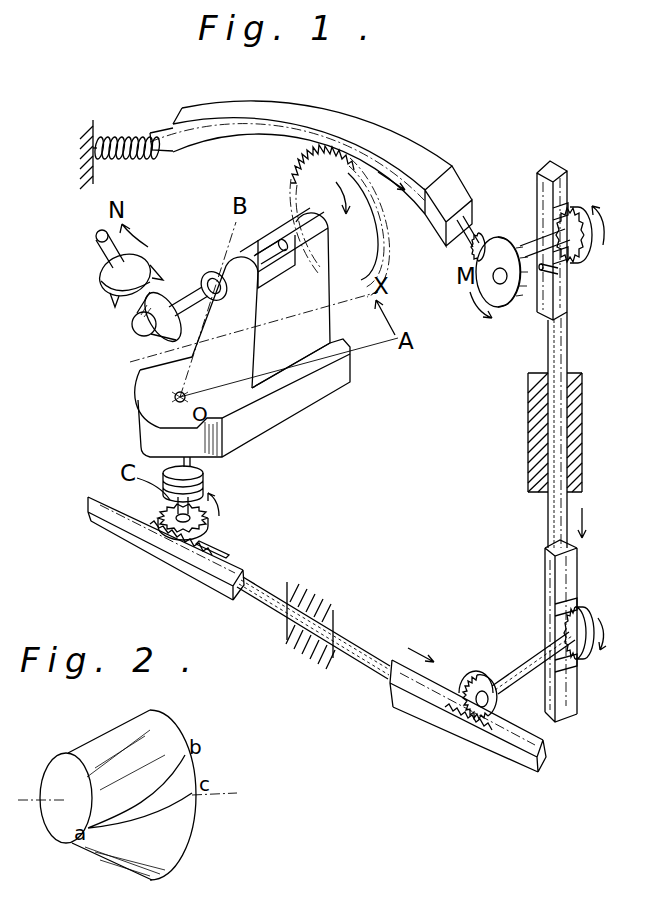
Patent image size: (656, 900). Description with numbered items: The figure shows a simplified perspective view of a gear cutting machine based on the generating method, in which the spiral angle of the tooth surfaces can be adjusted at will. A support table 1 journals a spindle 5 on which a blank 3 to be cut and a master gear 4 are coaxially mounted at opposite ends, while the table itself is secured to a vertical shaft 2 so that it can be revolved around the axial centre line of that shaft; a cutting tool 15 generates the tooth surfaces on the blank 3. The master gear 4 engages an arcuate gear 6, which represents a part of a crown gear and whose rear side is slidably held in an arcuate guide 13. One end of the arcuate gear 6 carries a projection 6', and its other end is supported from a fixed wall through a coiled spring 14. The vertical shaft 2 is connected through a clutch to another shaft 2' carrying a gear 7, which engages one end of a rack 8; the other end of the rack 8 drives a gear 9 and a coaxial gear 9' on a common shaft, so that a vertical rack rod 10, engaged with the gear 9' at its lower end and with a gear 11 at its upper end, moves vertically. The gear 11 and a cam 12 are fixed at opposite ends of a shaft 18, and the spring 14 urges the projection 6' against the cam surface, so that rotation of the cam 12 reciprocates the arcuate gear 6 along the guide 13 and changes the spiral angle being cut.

In FIG. 1, the support table 1 is at (290, 405).
In FIG. 1, the vertical shaft 2 is at (200, 485).
In FIG. 1, the shaft 2' is at (205, 516).
In FIG. 1, the blank 3 is at (160, 340).
In FIG. 2, the blank 3 is at (95, 745).
In FIG. 1, the master gear 4 is at (283, 177).
In FIG. 1, the spindle 5 is at (273, 267).
In FIG. 1, the arcuate gear 6 is at (389, 201).
In FIG. 1, the projection 6' is at (483, 219).
In FIG. 1, the gear 7 is at (170, 537).
In FIG. 1, the rack 8 is at (356, 642).
In FIG. 1, the gear 9 is at (506, 672).
In FIG. 1, the gear 9' is at (553, 625).
In FIG. 1, the vertical rack rod 10 is at (550, 524).
In FIG. 1, the gear 11 is at (578, 212).
In FIG. 1, the cam 12 is at (502, 306).
In FIG. 1, the arcuate guide 13 is at (418, 152).
In FIG. 1, the coiled spring 14 is at (121, 138).
In FIG. 1, the cutting tool 15 is at (112, 293).
In FIG. 1, the shaft 18 is at (552, 277).